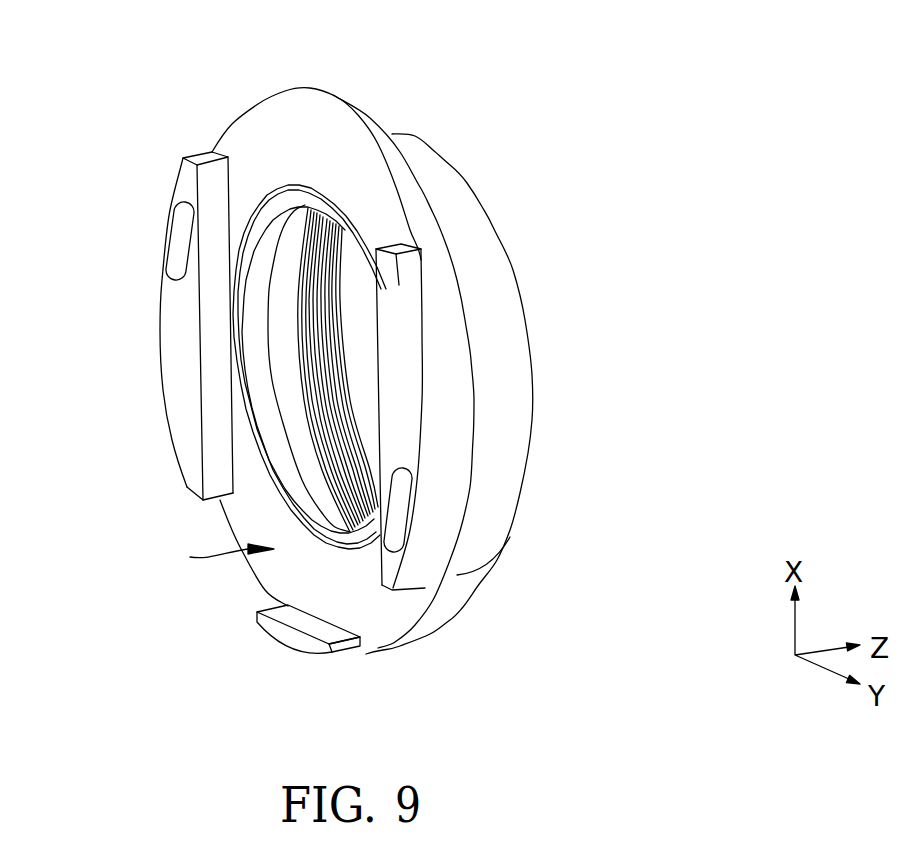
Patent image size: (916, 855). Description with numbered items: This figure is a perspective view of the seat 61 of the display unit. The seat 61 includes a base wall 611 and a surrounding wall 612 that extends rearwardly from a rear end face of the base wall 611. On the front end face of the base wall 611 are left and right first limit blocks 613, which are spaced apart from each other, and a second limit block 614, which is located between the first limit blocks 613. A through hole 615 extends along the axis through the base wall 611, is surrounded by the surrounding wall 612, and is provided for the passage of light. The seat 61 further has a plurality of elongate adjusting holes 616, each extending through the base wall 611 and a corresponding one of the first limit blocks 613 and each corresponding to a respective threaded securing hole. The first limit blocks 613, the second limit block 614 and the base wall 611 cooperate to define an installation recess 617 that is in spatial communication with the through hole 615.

The seat 61 is at (361, 328).
The base wall 611 is at (265, 117).
The surrounding wall 612 is at (418, 148).
The first limit blocks 613 is at (164, 340).
The second limit block 614 is at (278, 640).
The through hole 615 is at (355, 257).
The elongate adjusting holes 616 is at (172, 228).
The installation recess 617 is at (204, 562).